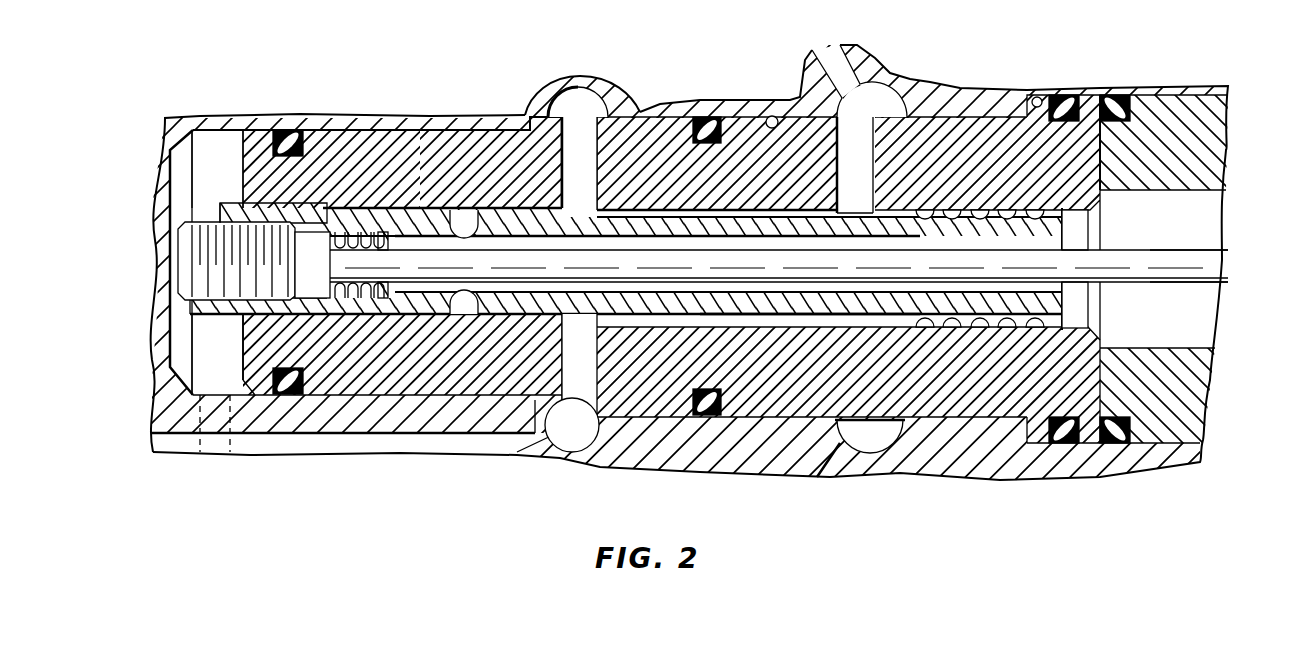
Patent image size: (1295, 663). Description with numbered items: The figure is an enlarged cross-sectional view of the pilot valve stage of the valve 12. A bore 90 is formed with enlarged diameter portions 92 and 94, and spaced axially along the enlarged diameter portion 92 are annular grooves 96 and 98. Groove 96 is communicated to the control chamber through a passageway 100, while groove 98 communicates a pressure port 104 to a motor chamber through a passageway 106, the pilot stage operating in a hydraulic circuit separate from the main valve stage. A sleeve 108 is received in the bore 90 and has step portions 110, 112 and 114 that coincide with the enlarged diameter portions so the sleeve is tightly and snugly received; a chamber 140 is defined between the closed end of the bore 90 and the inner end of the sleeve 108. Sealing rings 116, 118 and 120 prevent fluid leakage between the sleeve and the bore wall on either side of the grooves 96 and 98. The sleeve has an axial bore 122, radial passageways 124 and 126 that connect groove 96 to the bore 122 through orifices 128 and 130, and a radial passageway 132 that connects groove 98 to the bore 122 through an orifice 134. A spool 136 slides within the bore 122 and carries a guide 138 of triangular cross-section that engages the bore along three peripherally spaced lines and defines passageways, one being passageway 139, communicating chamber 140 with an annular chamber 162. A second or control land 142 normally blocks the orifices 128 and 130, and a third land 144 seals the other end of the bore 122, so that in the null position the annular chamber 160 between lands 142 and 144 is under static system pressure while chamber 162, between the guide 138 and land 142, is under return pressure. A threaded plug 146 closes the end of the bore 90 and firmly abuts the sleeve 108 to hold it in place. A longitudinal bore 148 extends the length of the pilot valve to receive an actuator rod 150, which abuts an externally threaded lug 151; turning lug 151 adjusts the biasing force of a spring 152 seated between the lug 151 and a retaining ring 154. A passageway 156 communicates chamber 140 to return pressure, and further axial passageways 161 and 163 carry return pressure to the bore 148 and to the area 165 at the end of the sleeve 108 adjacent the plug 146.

The housing 12 is at (160, 126).
The bore 90 is at (222, 148).
The sealing ring 116 is at (290, 130).
The sleeve 108 is at (380, 158).
The step portion 110 is at (432, 153).
The annular groove 96 is at (583, 106).
The step portion 112 is at (672, 142).
The sealing ring 118 is at (712, 118).
The enlarged diameter portion 92 is at (772, 115).
The passageway 106 is at (833, 55).
The annular groove 98 is at (893, 100).
The enlarged diameter portion 94 is at (1038, 96).
The sealing ring 120 is at (1064, 103).
The threaded plug 146 is at (1213, 141).
The radial passageway 126 is at (596, 164).
The orifice 130 is at (596, 199).
The radial passageway 132 is at (876, 169).
The orifice 134 is at (876, 204).
The step portion 114 is at (1050, 170).
The spool 136 is at (213, 210).
The guide 138 is at (302, 212).
The axial passageway 163 is at (473, 214).
The control land 142 is at (556, 216).
The externally threaded lug 151 is at (205, 271).
The retaining ring 154 is at (388, 248).
The longitudinal bore 148 is at (810, 240).
The actuator rod 150 is at (1200, 272).
The passageway 139 is at (256, 316).
The chamber 140 is at (215, 362).
The spring 152 is at (353, 300).
The annular chamber 162 is at (428, 318).
The axial passageway 161 is at (470, 306).
The orifice 128 is at (595, 328).
The axial bore 122 is at (724, 327).
The annular chamber 160 is at (824, 318).
The third land 144 is at (968, 324).
The area 165 is at (1076, 293).
The radial passageway 124 is at (597, 396).
The passageway 156 is at (228, 454).
The passageway 100 is at (472, 440).
The pressure port 104 is at (872, 466).